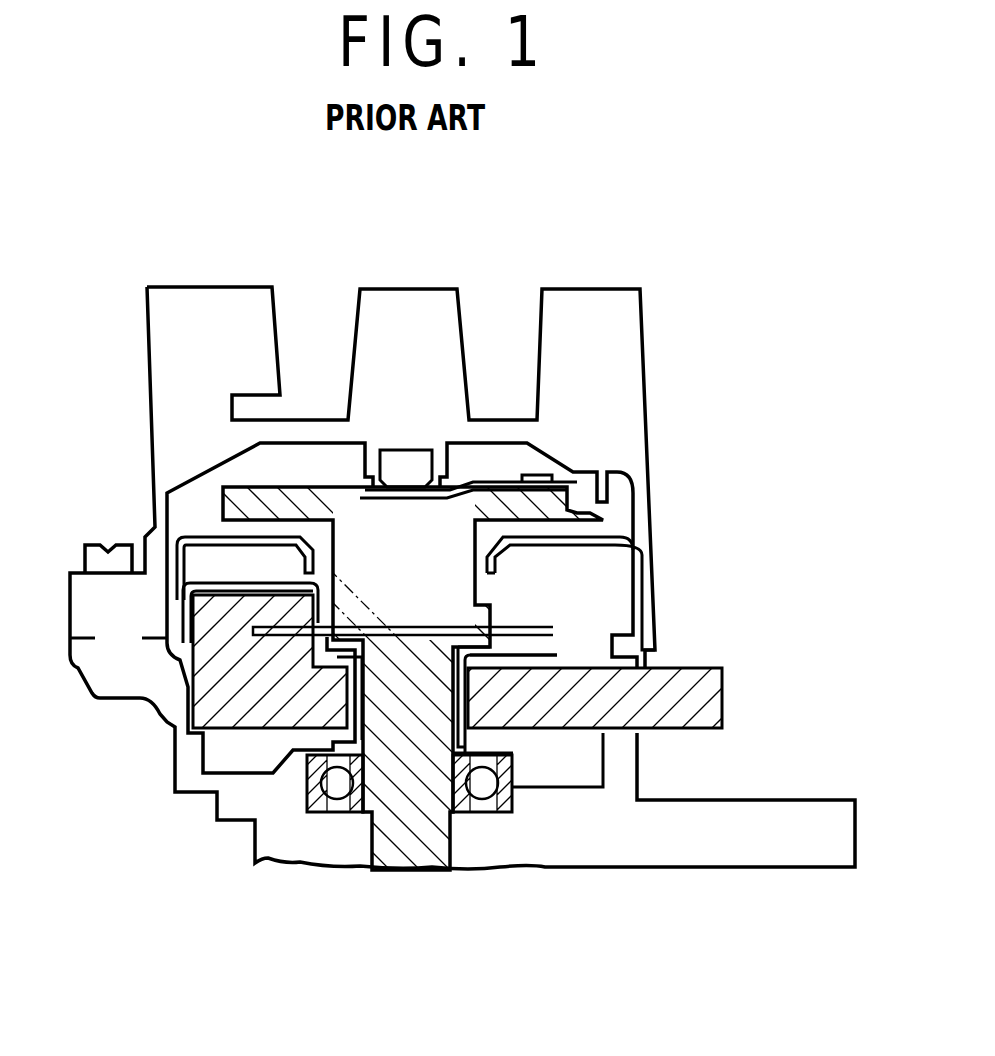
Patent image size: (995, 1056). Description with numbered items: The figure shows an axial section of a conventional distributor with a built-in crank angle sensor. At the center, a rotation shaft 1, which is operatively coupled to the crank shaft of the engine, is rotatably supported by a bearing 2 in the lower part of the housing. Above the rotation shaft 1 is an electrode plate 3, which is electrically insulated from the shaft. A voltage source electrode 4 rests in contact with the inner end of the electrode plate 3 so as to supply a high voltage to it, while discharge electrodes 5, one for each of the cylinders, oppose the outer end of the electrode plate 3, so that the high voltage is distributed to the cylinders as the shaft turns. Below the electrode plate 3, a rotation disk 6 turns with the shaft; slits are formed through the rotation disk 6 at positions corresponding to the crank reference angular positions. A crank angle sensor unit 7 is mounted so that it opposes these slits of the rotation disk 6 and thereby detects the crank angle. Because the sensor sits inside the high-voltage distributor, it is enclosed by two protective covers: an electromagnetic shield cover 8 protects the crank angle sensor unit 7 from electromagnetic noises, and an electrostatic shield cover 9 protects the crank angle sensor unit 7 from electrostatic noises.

The rotation shaft 1 is at (432, 870).
The bearing 2 is at (337, 800).
The electrode plate 3 is at (504, 482).
The voltage source electrode 4 is at (390, 455).
The discharge electrode 5 is at (603, 490).
The rotation disk 6 is at (548, 630).
The crank angle sensor unit 7 is at (683, 668).
The electromagnetic shield cover 8 is at (622, 590).
The electrostatic shield cover 9 is at (557, 656).